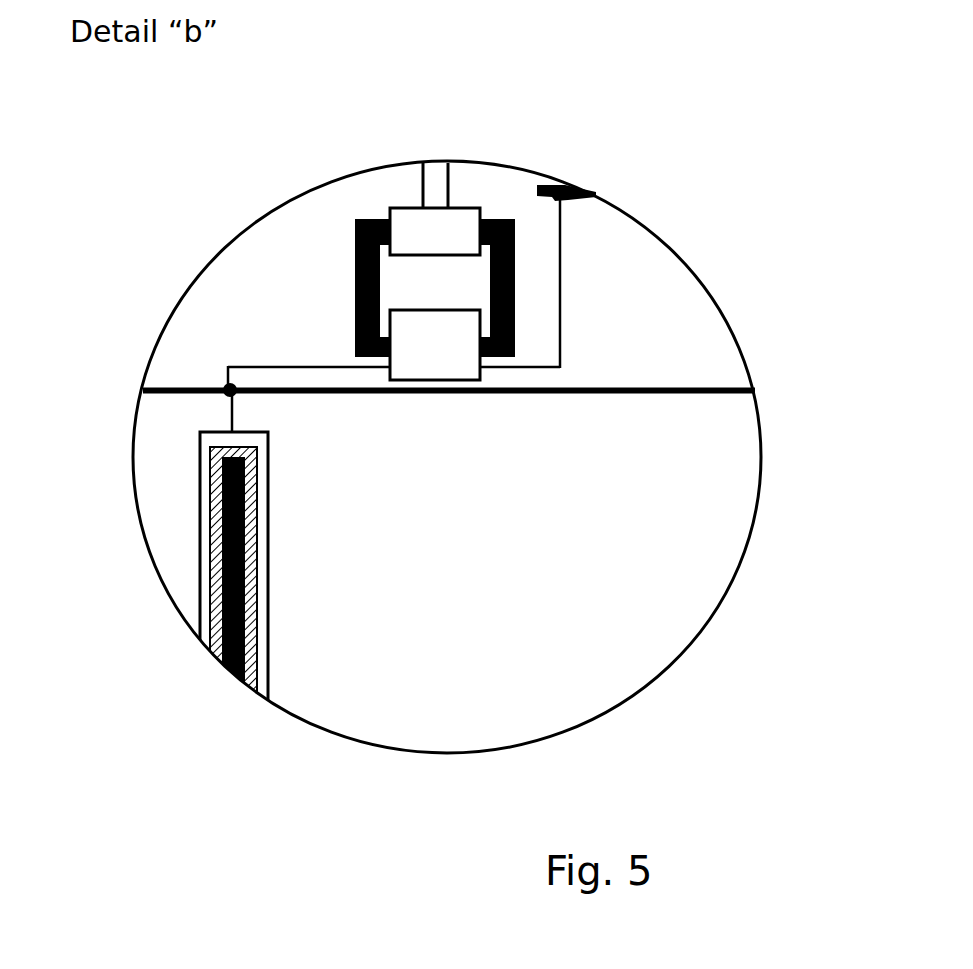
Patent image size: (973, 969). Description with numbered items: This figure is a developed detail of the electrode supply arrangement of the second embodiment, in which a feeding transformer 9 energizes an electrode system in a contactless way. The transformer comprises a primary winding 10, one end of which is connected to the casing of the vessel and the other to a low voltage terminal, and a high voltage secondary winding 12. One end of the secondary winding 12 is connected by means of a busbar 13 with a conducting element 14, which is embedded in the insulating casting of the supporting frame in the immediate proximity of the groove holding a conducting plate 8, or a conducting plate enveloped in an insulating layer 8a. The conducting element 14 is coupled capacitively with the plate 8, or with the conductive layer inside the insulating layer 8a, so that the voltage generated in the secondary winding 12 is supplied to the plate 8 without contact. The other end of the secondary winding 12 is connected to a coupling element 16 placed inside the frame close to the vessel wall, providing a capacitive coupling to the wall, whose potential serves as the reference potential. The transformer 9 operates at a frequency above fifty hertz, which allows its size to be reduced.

The conducting plate 8 is at (220, 657).
The insulating layer 8a is at (210, 630).
The feeding transformer 9 is at (515, 298).
The primary winding 10 is at (453, 220).
The high voltage secondary winding 12 is at (457, 368).
The busbar 13 is at (740, 388).
The conducting element 14 is at (200, 548).
The coupling element 16 is at (595, 195).